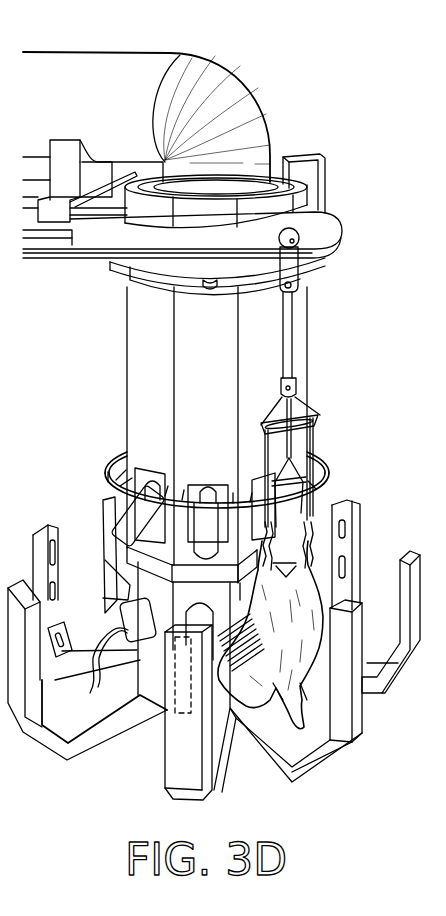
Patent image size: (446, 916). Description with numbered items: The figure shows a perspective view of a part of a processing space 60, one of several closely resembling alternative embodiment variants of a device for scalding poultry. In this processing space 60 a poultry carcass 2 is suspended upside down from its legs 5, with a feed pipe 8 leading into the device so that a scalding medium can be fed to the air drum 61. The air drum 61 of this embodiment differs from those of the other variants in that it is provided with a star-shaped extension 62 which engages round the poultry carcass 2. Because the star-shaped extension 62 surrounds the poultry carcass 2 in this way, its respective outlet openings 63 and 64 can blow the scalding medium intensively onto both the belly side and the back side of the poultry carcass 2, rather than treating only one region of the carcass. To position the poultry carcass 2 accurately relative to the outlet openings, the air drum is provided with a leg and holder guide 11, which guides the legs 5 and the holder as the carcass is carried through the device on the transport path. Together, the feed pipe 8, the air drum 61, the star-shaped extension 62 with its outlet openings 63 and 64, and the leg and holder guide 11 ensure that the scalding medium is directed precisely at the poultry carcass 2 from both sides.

The poultry carcass 2 is at (298, 687).
The legs 5 is at (323, 250).
The feed pipe 8 is at (128, 64).
The leg and holder guide 11 is at (328, 473).
The processing space 60 is at (78, 425).
The air drum 61 is at (145, 368).
The star-shaped extension 62 is at (115, 769).
The outlet openings 63 is at (172, 655).
The outlet openings 64 is at (55, 548).